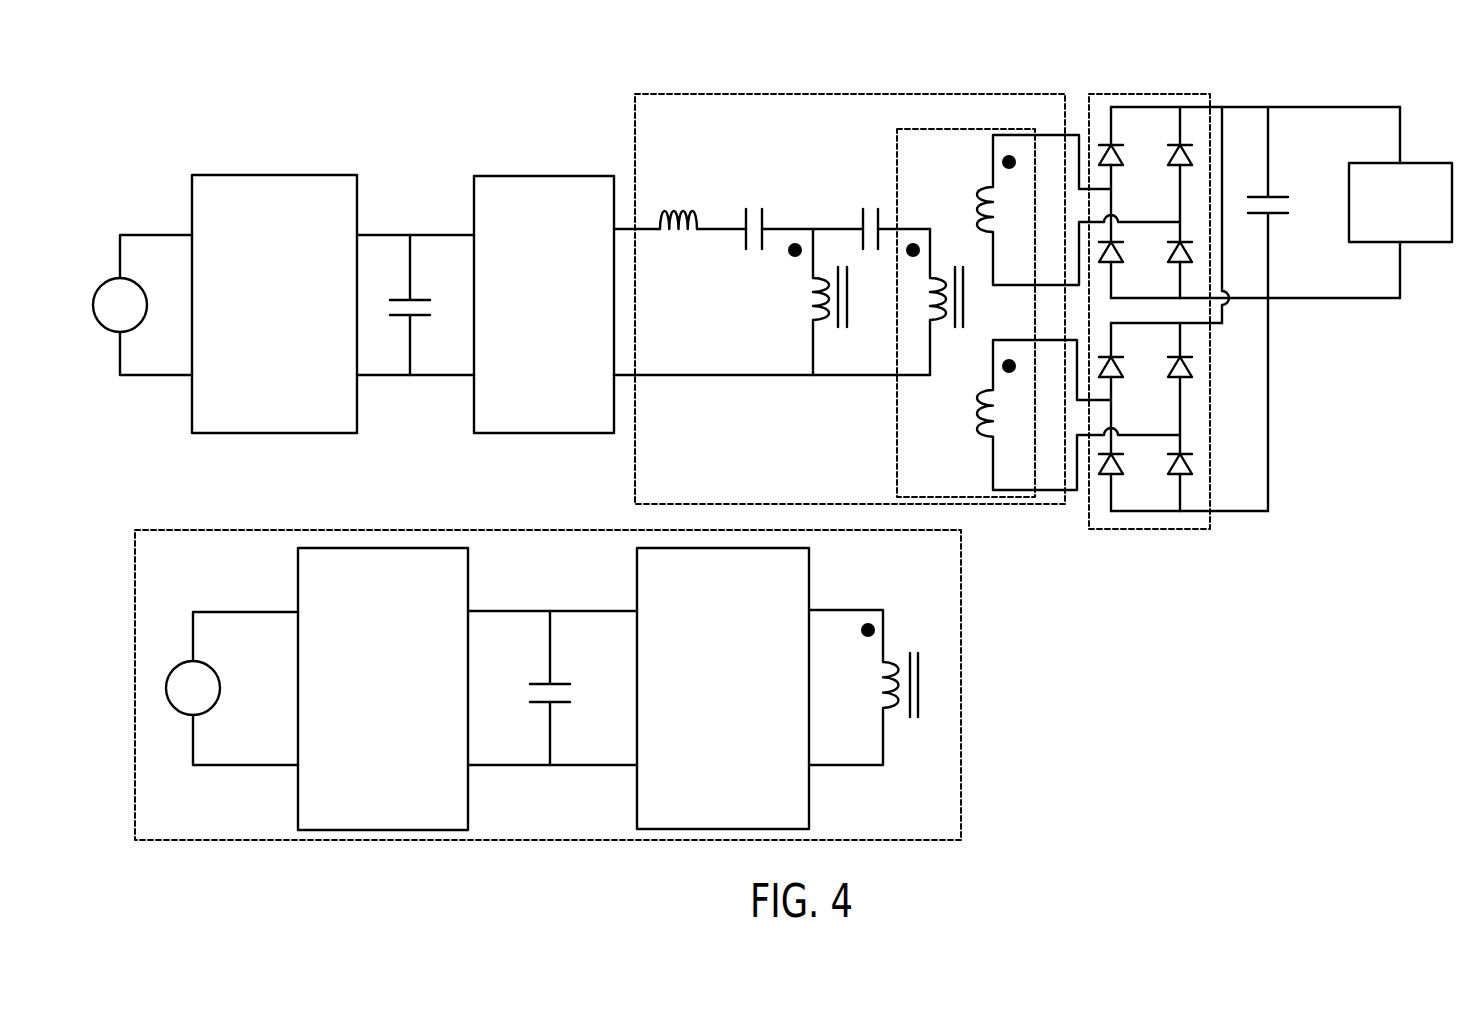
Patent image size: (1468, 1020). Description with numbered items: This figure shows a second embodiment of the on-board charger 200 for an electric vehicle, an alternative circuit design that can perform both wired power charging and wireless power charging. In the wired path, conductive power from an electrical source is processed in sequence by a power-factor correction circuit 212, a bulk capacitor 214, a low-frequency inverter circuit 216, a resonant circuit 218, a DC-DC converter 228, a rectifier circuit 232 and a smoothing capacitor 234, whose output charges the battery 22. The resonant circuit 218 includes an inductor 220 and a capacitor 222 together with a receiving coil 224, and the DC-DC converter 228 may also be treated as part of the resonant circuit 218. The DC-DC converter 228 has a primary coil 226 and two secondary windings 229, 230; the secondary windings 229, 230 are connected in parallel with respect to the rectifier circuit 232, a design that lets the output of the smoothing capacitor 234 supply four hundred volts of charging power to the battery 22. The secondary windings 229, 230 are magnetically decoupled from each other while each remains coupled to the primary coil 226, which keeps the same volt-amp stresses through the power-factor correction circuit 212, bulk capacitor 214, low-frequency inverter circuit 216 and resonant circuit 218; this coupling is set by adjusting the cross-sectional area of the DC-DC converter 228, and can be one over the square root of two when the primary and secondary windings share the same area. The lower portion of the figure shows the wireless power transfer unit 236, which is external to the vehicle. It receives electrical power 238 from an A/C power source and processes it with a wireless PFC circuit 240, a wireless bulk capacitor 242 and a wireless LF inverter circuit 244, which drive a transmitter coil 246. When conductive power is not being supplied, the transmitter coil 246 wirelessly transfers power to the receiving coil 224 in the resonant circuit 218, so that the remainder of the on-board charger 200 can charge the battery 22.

The on-board charger 200 is at (478, 118).
The power-factor correction (PFC) circuit 212 is at (357, 197).
The bulk capacitor 214 is at (419, 284).
The low-frequency (LF) inverter circuit 216 is at (560, 173).
The resonant circuit 218 is at (915, 92).
The inductor 220 is at (680, 246).
The capacitor 222 is at (744, 253).
The receiving coil 224 is at (809, 348).
The primary coil 226 is at (926, 348).
The DC-DC converter 228 is at (897, 158).
The secondary winding 229 is at (988, 176).
The secondary winding 230 is at (988, 460).
The rectifier circuit 232 is at (1192, 92).
The smoothing capacitor 234 is at (1284, 190).
The battery 22 is at (1415, 162).
The wireless power transfer unit 236 is at (966, 590).
The electrical power 238 is at (175, 668).
The wireless PFC circuit 240 is at (468, 571).
The wireless bulk capacitor 242 is at (562, 670).
The wireless LF inverter circuit 244 is at (809, 575).
The transmitter coil 246 is at (891, 742).